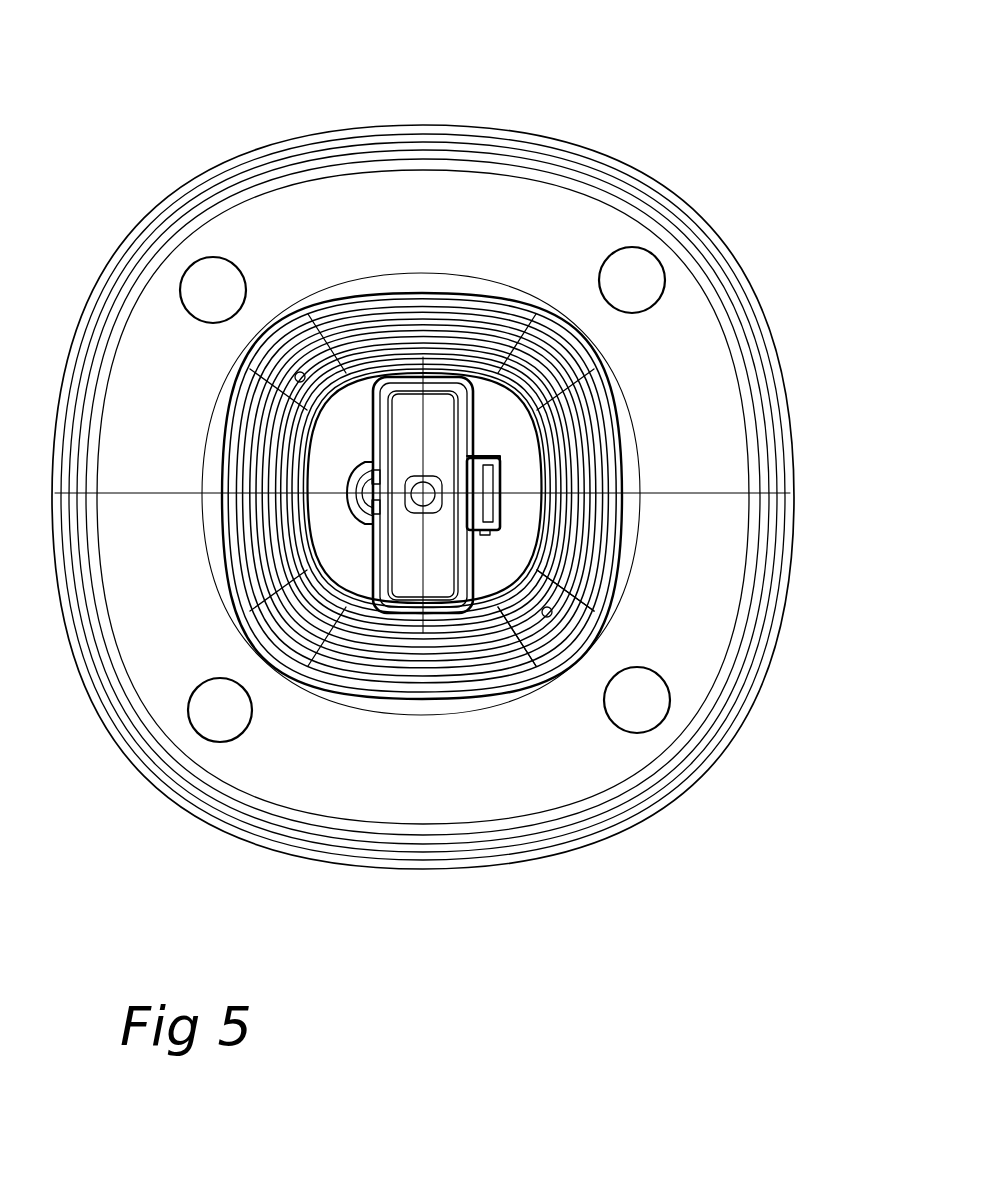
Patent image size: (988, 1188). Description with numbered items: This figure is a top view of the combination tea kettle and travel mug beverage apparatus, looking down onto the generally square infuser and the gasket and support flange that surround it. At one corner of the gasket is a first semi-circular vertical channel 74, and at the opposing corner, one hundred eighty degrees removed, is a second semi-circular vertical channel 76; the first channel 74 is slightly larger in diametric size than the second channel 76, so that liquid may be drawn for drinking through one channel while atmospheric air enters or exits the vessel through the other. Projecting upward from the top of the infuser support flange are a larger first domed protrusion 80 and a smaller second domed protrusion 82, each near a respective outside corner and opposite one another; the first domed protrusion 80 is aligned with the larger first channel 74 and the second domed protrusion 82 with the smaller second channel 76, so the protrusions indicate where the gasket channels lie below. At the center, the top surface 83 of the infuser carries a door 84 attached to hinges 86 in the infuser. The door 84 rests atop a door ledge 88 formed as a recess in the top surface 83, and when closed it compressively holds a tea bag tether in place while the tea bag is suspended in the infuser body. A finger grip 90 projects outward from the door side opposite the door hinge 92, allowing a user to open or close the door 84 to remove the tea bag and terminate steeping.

The first semi-circular vertical channel 74 is at (288, 398).
The second semi-circular vertical channel 76 is at (543, 630).
The first domed protrusion 80 is at (302, 373).
The second domed protrusion 82 is at (547, 607).
The top surface 83 is at (327, 455).
The door 84 is at (433, 417).
The hinges 86 is at (486, 457).
The door ledge 88 is at (384, 592).
The finger grip 90 is at (355, 500).
The door hinge 92 is at (482, 477).